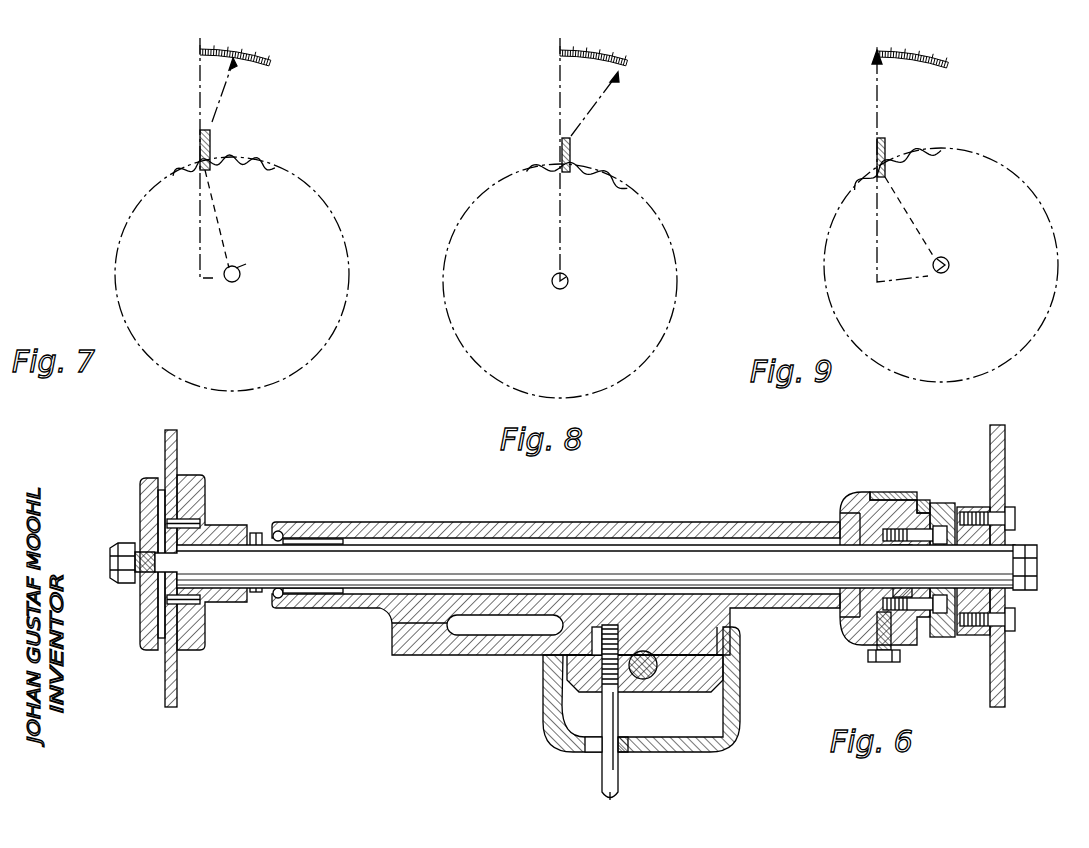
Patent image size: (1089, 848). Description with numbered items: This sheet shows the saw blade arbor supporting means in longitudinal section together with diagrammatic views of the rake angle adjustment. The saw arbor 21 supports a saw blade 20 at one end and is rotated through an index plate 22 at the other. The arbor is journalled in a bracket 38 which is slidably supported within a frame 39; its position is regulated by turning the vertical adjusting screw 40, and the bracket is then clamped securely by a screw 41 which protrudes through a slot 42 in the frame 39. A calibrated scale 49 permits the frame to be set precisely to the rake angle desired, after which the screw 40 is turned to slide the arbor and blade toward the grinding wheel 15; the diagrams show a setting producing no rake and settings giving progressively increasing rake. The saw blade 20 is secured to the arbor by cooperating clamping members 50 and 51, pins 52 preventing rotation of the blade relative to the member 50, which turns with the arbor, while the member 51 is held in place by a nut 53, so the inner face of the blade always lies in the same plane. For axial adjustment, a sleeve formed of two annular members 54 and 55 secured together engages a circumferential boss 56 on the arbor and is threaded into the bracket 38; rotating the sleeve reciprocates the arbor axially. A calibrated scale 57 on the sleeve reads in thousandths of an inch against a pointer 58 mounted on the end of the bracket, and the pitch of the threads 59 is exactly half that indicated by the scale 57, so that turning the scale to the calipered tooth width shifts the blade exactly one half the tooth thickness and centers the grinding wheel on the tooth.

In FIG. 7, the grinding wheel 15 is at (211, 146).
In FIG. 8, the grinding wheel 15 is at (571, 150).
In FIG. 9, the grinding wheel 15 is at (885, 152).
In FIG. 7, the saw blade 20 is at (330, 212).
In FIG. 8, the saw blade 20 is at (660, 212).
In FIG. 9, the saw blade 20 is at (1028, 186).
In FIG. 6, the saw blade 20 is at (165, 446).
In FIG. 7, the saw arbor 21 is at (240, 280).
In FIG. 8, the saw arbor 21 is at (568, 283).
In FIG. 9, the saw arbor 21 is at (950, 268).
In FIG. 6, the saw arbor 21 is at (611, 553).
In FIG. 6, the index plate 22 is at (1006, 462).
In FIG. 6, the bracket 38 is at (468, 523).
In FIG. 6, the frame 39 is at (740, 703).
In FIG. 6, the vertical adjusting screw 40 is at (645, 678).
In FIG. 6, the screw 41 is at (602, 779).
In FIG. 6, the slot 42 is at (624, 747).
In FIG. 7, the calibrated scale 49 is at (264, 62).
In FIG. 8, the calibrated scale 49 is at (611, 58).
In FIG. 9, the calibrated scale 49 is at (921, 62).
In FIG. 6, the clamping member 50 is at (201, 480).
In FIG. 6, the clamping member 51 is at (143, 617).
In FIG. 6, the pins 52 is at (200, 634).
In FIG. 6, the nut 53 is at (122, 545).
In FIG. 6, the annular member 54 is at (838, 632).
In FIG. 6, the annular member 55 is at (943, 622).
In FIG. 6, the circumferential boss 56 is at (858, 532).
In FIG. 6, the calibrated scale 57 is at (934, 503).
In FIG. 6, the pointer 58 is at (920, 499).
In FIG. 6, the threads 59 is at (866, 520).